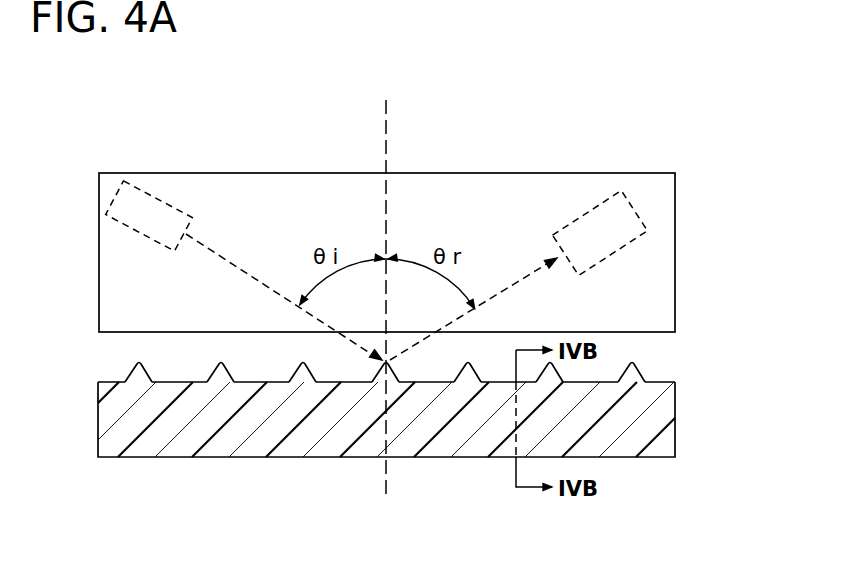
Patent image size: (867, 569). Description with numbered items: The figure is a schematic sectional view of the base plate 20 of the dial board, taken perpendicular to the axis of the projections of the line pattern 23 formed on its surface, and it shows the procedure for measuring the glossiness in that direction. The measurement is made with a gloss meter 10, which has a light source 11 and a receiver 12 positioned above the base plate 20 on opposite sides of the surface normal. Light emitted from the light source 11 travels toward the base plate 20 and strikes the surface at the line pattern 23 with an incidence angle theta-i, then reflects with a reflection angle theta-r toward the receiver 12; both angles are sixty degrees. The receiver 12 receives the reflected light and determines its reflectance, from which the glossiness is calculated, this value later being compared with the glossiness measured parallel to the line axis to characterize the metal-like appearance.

The gloss meter 10 is at (457, 172).
The light source 11 is at (168, 196).
The receiver 12 is at (637, 205).
The base plate 20 is at (457, 457).
The line pattern 23 is at (643, 372).